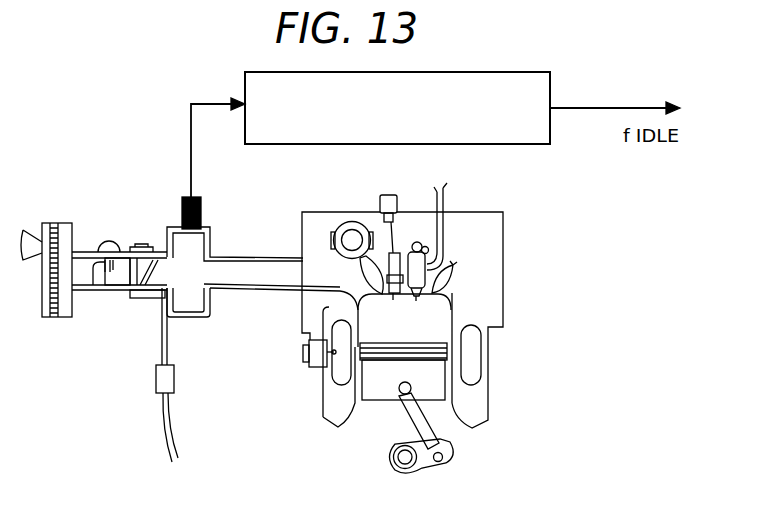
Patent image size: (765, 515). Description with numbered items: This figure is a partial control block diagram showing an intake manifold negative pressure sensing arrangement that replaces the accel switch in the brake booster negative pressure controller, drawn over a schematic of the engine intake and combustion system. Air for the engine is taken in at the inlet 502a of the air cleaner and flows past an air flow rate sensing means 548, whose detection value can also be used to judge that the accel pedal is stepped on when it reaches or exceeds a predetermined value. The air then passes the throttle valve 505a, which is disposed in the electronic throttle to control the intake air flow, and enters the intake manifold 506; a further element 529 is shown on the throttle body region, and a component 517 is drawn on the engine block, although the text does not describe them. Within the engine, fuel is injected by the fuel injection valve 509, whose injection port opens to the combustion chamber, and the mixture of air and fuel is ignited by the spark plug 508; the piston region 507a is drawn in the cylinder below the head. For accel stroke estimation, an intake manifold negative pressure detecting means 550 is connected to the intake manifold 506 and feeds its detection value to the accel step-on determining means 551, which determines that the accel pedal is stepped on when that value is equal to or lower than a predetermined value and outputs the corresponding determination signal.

The inlet of air cleaner 502a is at (25, 263).
The air flow rate sensing means 548 is at (100, 291).
The throttle valve 505a is at (155, 269).
The intake manifold 506 is at (191, 303).
The throttle sensor 529 is at (156, 379).
The intake manifold negative pressure detecting means 550 is at (200, 199).
The accel step-on determining means 551 is at (553, 88).
The spark plug 508 is at (391, 302).
The fuel injection valve 509 is at (416, 302).
The crank angle sensor 517 is at (303, 369).
The piston 507a is at (370, 392).